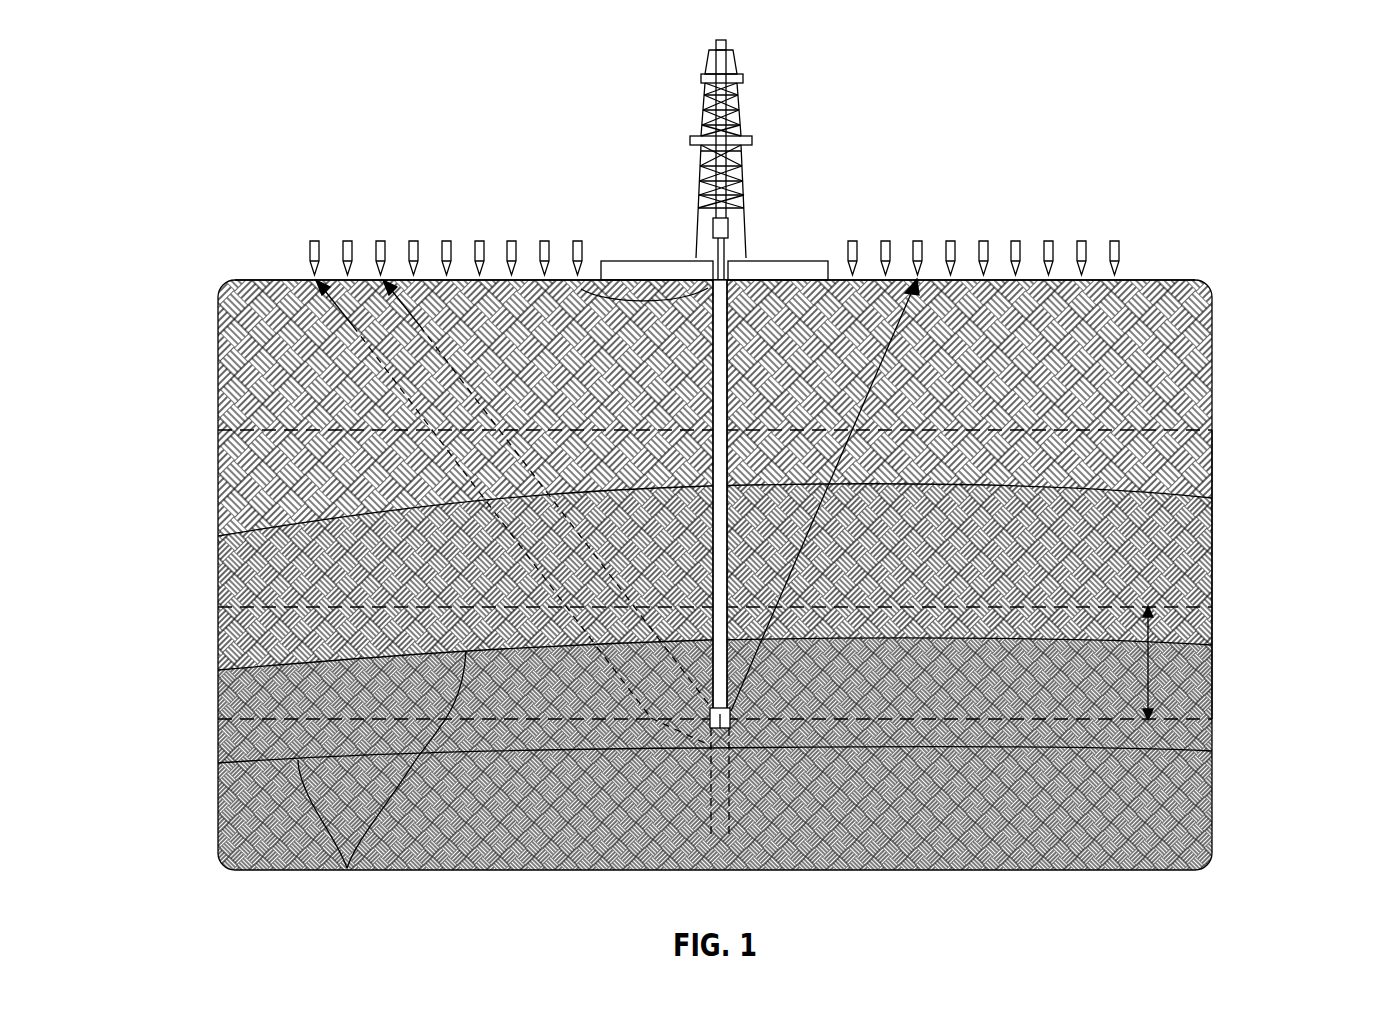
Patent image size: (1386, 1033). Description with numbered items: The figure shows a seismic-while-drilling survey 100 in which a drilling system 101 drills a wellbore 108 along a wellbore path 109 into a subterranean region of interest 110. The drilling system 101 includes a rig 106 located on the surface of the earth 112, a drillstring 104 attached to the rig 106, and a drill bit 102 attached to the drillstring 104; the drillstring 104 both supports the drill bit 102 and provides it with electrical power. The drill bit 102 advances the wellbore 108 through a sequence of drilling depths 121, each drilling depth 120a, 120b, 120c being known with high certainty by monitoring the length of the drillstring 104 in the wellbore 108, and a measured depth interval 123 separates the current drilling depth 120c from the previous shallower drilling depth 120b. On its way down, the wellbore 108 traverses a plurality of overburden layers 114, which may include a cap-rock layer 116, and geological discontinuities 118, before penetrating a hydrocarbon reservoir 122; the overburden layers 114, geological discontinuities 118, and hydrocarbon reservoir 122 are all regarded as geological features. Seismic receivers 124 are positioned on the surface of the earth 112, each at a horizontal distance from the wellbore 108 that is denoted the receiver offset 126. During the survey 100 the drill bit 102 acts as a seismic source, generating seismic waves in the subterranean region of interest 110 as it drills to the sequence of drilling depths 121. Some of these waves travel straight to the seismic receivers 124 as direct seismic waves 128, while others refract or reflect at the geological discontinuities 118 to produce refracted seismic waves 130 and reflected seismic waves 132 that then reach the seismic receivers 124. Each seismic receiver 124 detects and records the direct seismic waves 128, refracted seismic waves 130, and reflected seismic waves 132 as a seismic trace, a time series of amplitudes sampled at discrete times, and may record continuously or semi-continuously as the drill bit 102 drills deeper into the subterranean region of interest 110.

The seismic-while-drilling survey 100 is at (201, 107).
The drilling system 101 is at (715, 160).
The drill bit 102 is at (720, 720).
The drillstring 104 is at (710, 245).
The rig 106 is at (738, 72).
The wellbore 108 is at (703, 418).
The wellbore path 109 is at (712, 827).
The subterranean region of interest 110 is at (674, 575).
The surface of the earth 112 is at (1147, 270).
The overburden layers 114 is at (1183, 375).
The cap-rock layer 116 is at (627, 723).
The geological discontinuities 118 is at (339, 860).
The drilling depth 120a is at (1208, 422).
The drilling depth 120b is at (1208, 600).
The drilling depth 120c is at (1208, 712).
The sequence of drilling depths 121 is at (1307, 390).
The hydrocarbon reservoir 122 is at (1180, 827).
The measured depth interval 123 is at (1140, 697).
The seismic receivers 124 is at (1112, 220).
The receiver offset 126 is at (644, 309).
The direct seismic waves 128 is at (870, 385).
The refracted seismic waves 130 is at (425, 335).
The reflected seismic waves 132 is at (345, 312).